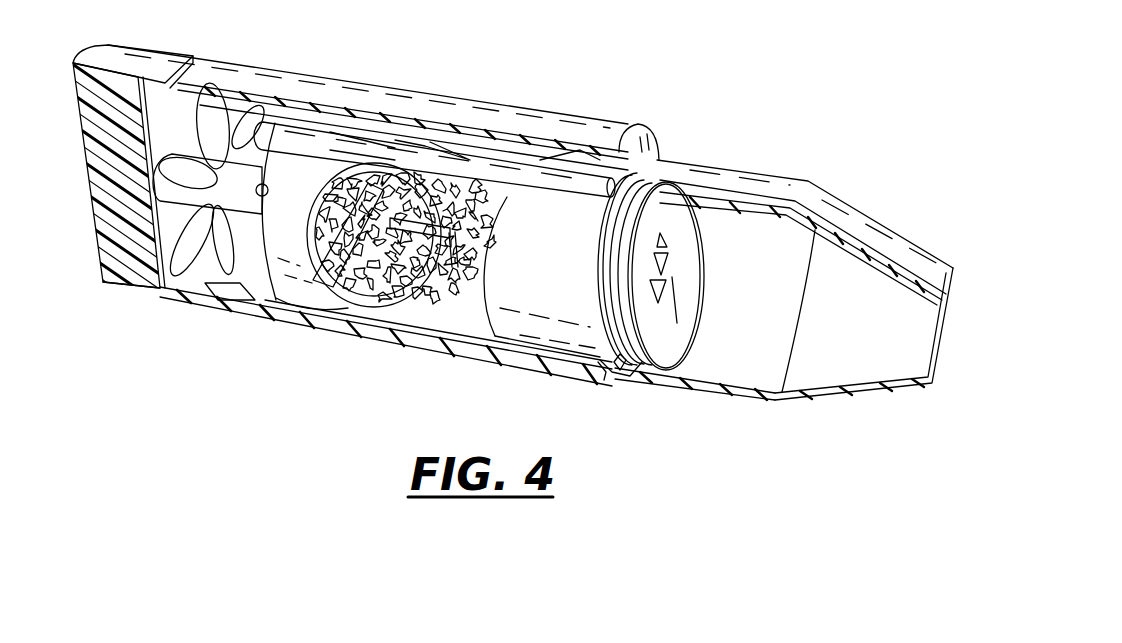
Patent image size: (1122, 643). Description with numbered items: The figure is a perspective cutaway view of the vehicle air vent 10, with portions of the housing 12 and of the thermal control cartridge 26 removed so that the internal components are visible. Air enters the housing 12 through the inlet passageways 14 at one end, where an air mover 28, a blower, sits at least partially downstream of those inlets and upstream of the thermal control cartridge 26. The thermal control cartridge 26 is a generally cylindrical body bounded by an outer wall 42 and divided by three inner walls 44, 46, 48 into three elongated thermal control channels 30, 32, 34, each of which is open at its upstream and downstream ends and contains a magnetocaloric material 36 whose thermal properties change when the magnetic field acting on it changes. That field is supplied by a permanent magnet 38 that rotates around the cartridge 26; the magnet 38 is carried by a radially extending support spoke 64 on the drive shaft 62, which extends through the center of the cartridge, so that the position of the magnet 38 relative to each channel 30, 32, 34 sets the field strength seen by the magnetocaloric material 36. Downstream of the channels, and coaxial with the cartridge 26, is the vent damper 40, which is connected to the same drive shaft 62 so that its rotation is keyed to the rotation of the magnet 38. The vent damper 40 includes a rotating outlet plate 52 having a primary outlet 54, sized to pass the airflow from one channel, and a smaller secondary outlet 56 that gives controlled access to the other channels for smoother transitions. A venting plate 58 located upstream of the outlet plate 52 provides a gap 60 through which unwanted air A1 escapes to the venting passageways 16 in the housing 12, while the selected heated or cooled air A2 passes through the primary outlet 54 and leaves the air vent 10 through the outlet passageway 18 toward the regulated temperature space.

The air vent 10 is at (675, 63).
The housing 12 is at (733, 183).
The inlet passageways 14 is at (190, 66).
The venting passageways 16 is at (650, 170).
The outlet passageway 18 is at (948, 327).
The thermal control cartridge 26 is at (587, 167).
The air mover 28 is at (188, 237).
The thermal control channel 30 is at (343, 170).
The thermal control channel 32 is at (370, 292).
The thermal control channel 34 is at (423, 147).
The magnetocaloric material 36 is at (397, 277).
The permanent magnet 38 is at (400, 150).
The vent damper 40 is at (658, 347).
The outer wall 42 is at (297, 284).
The inner wall 44 is at (374, 180).
The inner wall 46 is at (335, 290).
The inner wall 48 is at (440, 250).
The rotating outlet plate 52 is at (652, 362).
The primary outlet 54 is at (685, 247).
The secondary outlet 56 is at (650, 288).
The venting plate 58 is at (608, 363).
The gap 60 is at (625, 370).
The drive shaft 62 is at (452, 232).
The support spoke 64 is at (268, 130).